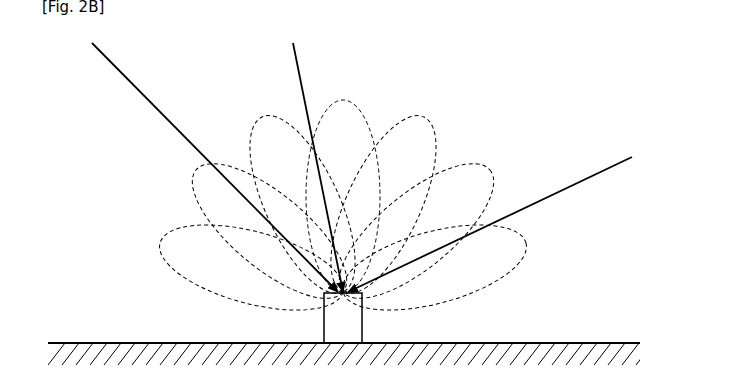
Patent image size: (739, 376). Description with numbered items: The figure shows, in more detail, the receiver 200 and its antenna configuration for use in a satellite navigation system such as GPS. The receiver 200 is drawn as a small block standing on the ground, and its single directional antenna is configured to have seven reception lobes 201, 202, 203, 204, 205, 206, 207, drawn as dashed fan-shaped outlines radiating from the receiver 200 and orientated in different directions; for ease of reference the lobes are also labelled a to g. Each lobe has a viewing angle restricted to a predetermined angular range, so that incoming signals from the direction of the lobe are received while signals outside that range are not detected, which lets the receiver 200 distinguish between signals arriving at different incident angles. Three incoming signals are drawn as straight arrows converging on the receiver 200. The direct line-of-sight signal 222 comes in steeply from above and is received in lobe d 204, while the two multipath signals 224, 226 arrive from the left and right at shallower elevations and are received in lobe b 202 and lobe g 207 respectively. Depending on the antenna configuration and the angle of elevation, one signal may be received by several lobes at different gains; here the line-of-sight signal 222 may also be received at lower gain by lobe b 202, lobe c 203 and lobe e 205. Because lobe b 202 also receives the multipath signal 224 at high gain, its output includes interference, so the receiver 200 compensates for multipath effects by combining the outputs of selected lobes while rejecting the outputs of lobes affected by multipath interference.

The receiver 200 is at (362, 324).
The lobe a 201 is at (160, 241).
The lobe b 202 is at (196, 170).
The lobe c 203 is at (265, 117).
The lobe d 204 is at (343, 100).
The lobe e 205 is at (424, 117).
The lobe f 206 is at (488, 163).
The lobe g 207 is at (527, 239).
The direct line-of-sight signal 222 is at (296, 52).
The multipath signal 224 is at (122, 67).
The multipath signal 226 is at (615, 164).